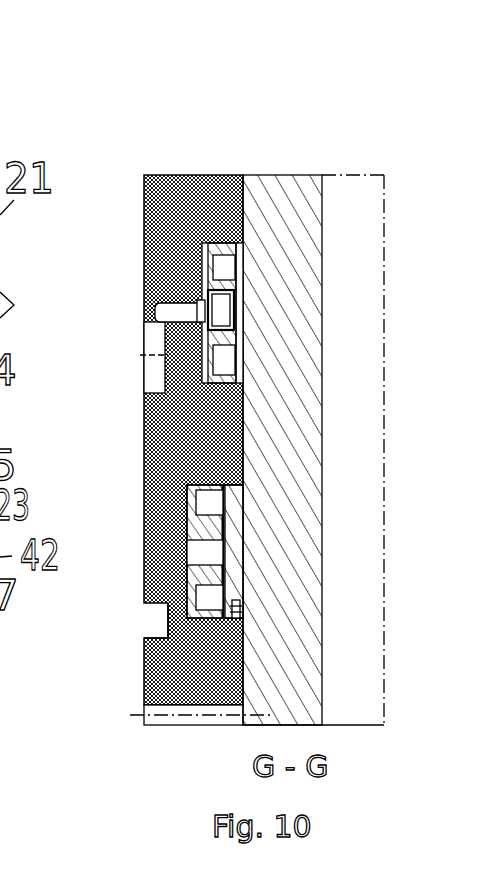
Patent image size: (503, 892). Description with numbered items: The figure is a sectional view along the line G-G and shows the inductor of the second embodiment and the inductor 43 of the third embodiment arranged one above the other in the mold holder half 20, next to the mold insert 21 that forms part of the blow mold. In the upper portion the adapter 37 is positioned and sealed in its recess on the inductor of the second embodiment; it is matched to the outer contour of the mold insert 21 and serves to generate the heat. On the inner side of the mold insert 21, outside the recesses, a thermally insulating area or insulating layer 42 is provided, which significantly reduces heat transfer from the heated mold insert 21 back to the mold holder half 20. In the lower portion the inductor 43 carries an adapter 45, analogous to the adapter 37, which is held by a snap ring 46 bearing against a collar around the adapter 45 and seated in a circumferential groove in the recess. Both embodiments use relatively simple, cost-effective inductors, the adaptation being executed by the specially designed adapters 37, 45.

The mold holder half 20 is at (170, 146).
The mold insert 21 is at (296, 147).
The adapter 37 is at (238, 305).
The insulating layer 42 is at (325, 420).
The inductor 43 is at (166, 553).
The adapter 45 is at (224, 544).
The snap ring 46 is at (238, 607).